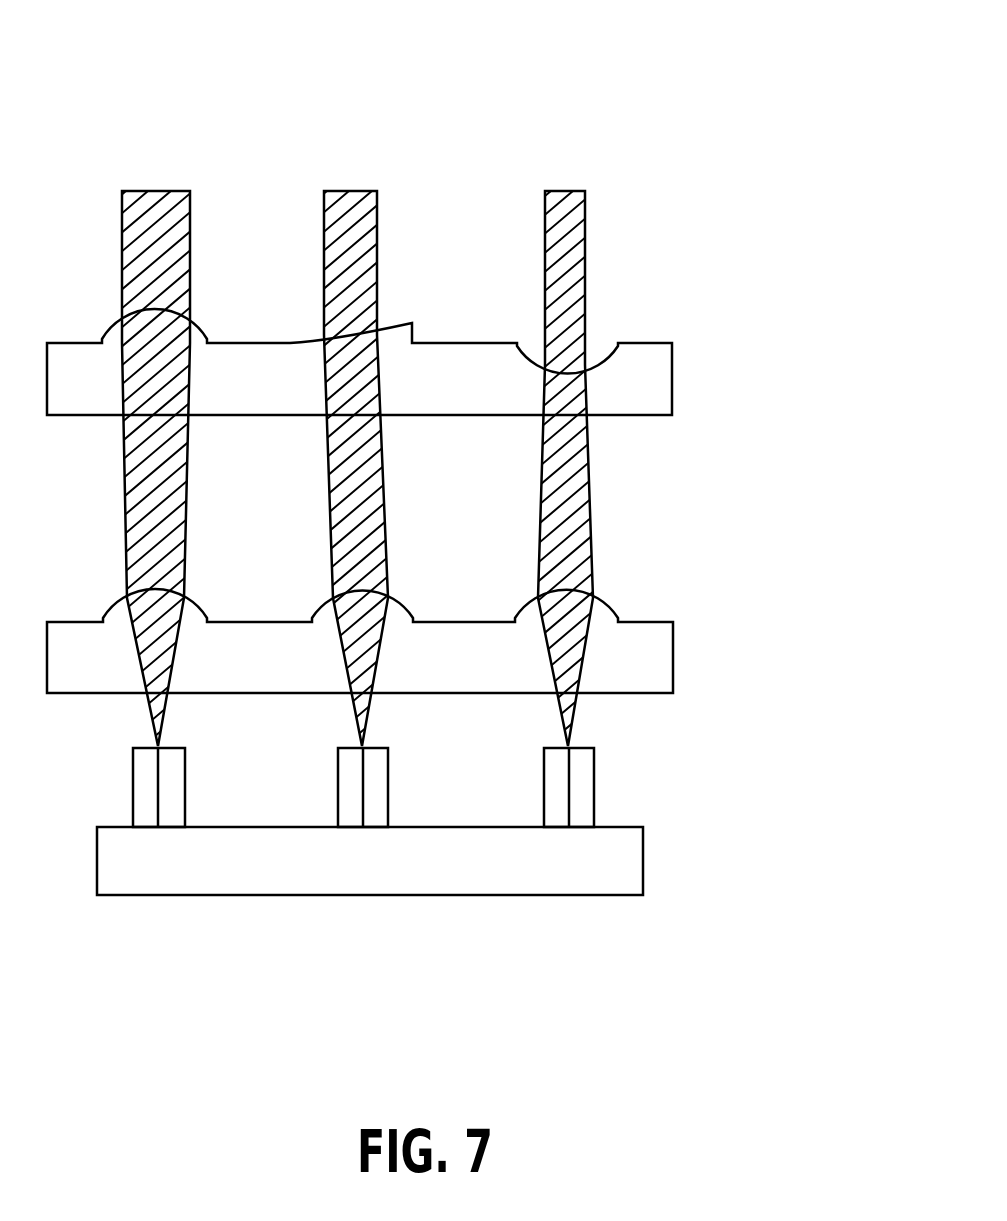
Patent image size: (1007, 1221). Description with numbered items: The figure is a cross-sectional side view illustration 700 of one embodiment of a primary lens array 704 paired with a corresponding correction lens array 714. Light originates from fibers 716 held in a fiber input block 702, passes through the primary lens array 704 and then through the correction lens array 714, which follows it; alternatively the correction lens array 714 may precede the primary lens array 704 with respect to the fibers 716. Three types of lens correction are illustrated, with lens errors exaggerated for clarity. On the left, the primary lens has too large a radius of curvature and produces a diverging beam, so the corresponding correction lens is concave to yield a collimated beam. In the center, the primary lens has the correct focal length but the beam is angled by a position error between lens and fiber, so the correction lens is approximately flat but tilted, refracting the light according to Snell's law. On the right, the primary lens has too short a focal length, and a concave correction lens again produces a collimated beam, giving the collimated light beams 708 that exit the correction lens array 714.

The illustration 700 is at (720, 68).
The collimated light beams 708 is at (570, 170).
The correction lens array 714 is at (663, 322).
The primary lens array 704 is at (652, 653).
The fibers 716 is at (597, 812).
The fiber input block 702 is at (632, 853).